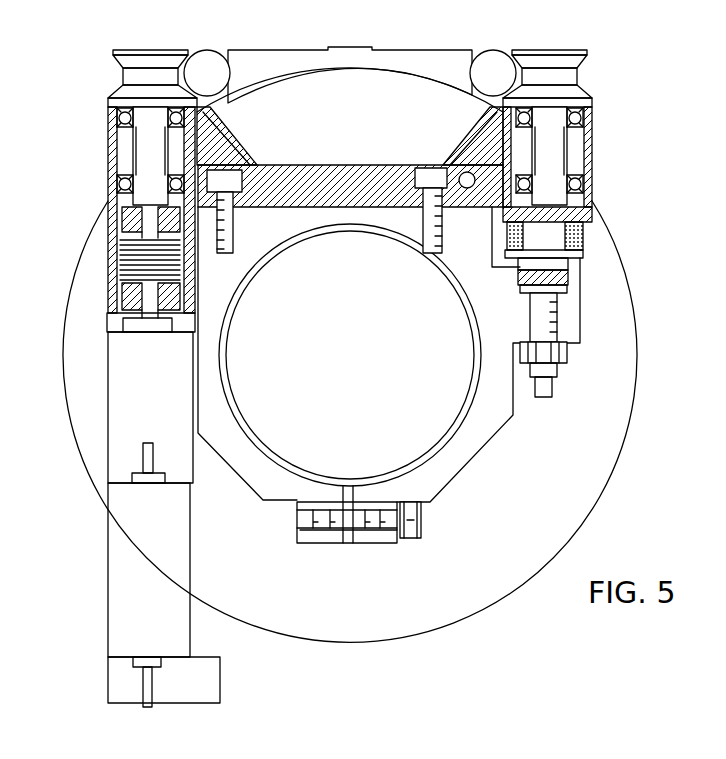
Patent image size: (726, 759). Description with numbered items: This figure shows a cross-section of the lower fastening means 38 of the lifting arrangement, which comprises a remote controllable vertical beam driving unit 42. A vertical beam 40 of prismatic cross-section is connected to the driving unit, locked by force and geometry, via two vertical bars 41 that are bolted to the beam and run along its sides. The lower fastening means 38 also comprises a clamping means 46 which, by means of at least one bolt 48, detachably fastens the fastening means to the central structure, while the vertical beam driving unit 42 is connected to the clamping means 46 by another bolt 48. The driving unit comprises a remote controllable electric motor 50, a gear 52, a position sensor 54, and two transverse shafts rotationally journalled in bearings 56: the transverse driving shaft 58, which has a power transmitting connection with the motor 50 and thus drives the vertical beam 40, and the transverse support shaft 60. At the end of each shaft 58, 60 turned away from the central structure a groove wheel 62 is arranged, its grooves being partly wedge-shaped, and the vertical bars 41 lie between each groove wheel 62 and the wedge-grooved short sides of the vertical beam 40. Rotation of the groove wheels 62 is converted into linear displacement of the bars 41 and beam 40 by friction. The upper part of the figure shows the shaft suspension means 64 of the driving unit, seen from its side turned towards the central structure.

The lower fastening means 38 is at (499, 492).
The vertical beam 40 is at (432, 58).
The vertical bars 41 is at (205, 63).
The vertical beam driving unit 42 is at (212, 505).
The clamping means 46 is at (492, 413).
The bolt 48 is at (223, 173).
The motor 50 is at (122, 547).
The gear 52 is at (128, 407).
The position sensor 54 is at (124, 677).
The bearings 56 is at (115, 117).
The transverse driving shaft 58 is at (142, 197).
The transverse support shaft 60 is at (553, 137).
The groove wheel 62 is at (130, 50).
The shaft suspension means 64 is at (353, 168).